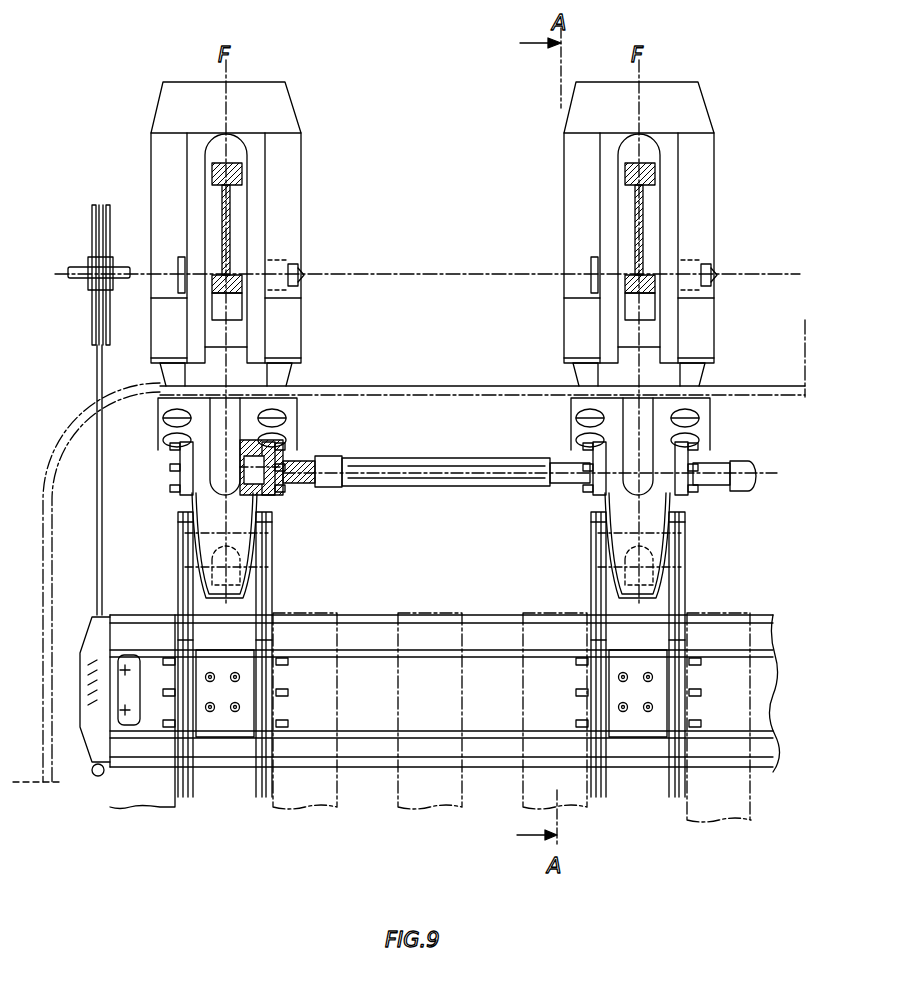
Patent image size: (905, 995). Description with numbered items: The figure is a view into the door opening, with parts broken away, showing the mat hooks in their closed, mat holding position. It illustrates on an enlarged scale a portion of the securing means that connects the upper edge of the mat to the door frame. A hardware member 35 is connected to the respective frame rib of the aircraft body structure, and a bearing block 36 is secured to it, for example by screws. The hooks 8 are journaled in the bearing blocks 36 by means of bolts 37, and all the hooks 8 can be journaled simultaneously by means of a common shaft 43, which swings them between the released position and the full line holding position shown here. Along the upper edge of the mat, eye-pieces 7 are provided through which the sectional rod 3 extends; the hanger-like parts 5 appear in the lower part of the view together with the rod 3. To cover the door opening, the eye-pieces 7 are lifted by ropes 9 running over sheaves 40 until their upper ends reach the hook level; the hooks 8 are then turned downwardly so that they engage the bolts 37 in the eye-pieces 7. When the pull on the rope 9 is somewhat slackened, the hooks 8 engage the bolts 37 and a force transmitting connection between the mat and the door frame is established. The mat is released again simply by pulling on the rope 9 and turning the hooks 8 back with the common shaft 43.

The sectional rod 3 is at (757, 762).
The hanger plate 5 is at (458, 793).
The eye-piece 7 is at (267, 545).
The hook 8 is at (200, 507).
The rope 9 is at (97, 386).
The hardware member 35 is at (290, 105).
The bearing block 36 is at (290, 398).
The bolt 37 is at (290, 450).
The sheave 40 is at (92, 215).
The common shaft 43 is at (412, 460).